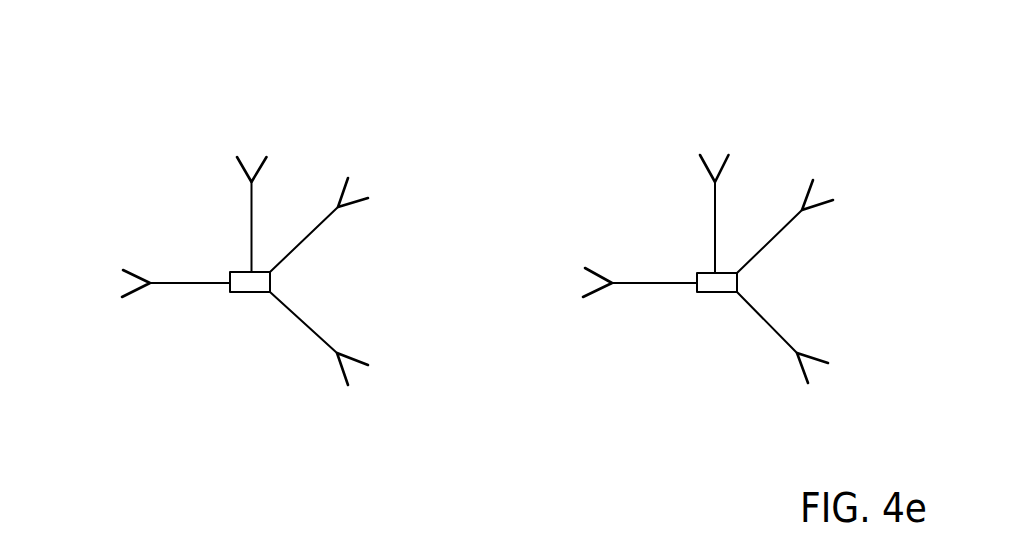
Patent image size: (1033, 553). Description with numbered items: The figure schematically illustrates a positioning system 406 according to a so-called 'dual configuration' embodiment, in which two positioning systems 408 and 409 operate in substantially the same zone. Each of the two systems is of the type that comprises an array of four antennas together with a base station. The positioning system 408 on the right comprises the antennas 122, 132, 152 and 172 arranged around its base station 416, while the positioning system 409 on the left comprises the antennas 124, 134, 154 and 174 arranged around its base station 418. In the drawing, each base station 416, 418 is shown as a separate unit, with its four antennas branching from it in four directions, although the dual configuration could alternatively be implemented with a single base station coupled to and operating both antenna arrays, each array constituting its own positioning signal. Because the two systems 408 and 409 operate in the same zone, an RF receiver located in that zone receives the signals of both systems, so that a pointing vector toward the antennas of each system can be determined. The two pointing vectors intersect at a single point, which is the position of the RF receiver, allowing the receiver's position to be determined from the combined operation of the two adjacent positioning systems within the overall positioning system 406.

The positioning system 406 is at (555, 107).
The positioning system 408 is at (662, 193).
The positioning system 409 is at (393, 157).
The base station 418 is at (252, 294).
The base station 416 is at (718, 294).
The antenna 174 is at (250, 155).
The antenna 172 is at (713, 155).
The antenna 154 is at (363, 192).
The antenna 152 is at (827, 195).
The antenna 134 is at (360, 380).
The antenna 132 is at (820, 378).
The antenna 124 is at (122, 283).
The antenna 122 is at (587, 282).